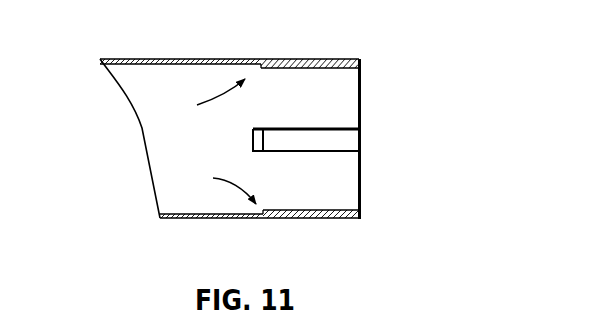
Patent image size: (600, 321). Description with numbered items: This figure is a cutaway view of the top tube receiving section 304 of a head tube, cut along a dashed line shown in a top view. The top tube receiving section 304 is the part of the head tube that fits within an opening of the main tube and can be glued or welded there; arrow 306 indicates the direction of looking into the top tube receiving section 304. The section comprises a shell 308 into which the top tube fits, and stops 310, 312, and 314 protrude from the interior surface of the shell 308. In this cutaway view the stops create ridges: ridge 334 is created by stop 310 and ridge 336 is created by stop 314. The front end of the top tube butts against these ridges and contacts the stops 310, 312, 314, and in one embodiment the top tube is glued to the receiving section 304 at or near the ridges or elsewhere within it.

The top tube receiving section 304 is at (361, 190).
The arrow 306 is at (139, 153).
The shell 308 is at (159, 58).
The stop 310 is at (347, 58).
The stop 312 is at (347, 137).
The stop 314 is at (330, 219).
The ridge 334 is at (197, 98).
The ridge 336 is at (209, 186).